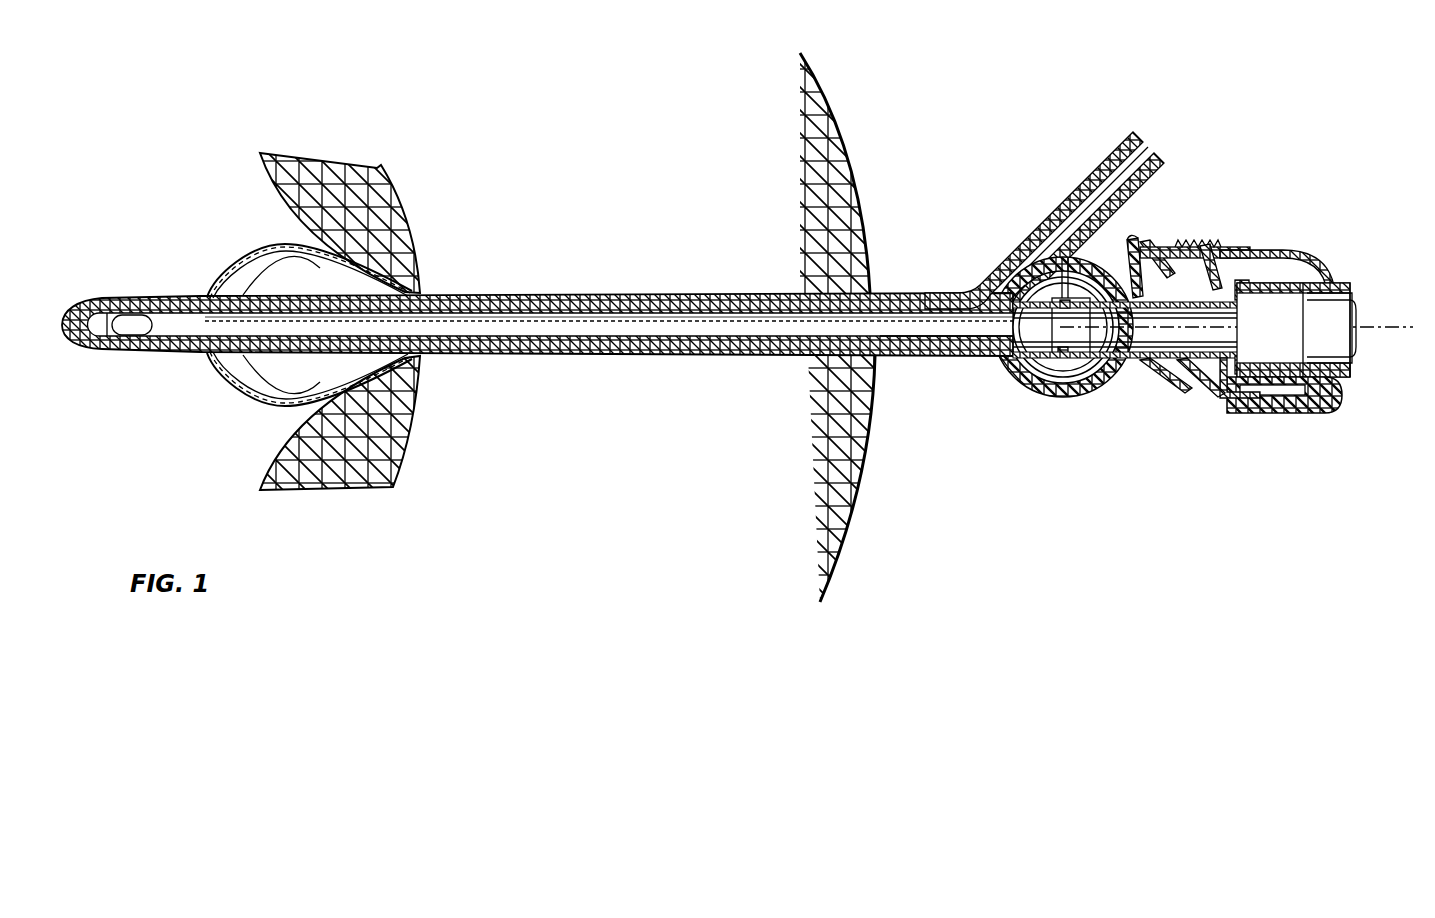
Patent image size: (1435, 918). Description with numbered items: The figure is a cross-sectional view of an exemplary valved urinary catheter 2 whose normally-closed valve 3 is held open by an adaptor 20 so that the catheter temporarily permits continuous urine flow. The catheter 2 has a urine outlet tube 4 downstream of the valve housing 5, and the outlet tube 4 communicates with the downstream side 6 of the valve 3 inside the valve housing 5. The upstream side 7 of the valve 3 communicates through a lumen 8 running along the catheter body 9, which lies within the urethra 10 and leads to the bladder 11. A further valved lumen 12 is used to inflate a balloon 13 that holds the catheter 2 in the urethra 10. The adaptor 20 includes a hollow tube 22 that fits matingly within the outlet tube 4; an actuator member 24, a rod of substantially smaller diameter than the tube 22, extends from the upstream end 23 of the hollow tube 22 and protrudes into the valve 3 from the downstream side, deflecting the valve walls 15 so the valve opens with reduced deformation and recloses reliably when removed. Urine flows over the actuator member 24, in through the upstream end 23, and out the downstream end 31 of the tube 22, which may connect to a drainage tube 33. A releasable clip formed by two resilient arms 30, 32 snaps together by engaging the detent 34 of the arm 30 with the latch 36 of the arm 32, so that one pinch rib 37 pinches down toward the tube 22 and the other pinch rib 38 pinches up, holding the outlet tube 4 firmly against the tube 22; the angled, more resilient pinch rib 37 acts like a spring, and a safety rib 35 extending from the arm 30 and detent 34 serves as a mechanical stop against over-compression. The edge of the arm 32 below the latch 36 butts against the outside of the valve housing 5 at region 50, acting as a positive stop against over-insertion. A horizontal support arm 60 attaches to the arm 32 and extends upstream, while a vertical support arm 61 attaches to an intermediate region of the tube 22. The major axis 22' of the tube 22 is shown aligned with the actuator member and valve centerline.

The valved urinary catheter 2 is at (695, 372).
The valve 3 is at (1068, 388).
The urine outlet tube 4 is at (1127, 362).
The valve housing 5 is at (1058, 397).
The downstream side 6 is at (1092, 385).
The upstream side 7 is at (1003, 260).
The lumen 8 is at (915, 318).
The catheter body 9 is at (708, 292).
The urethra 10 is at (733, 358).
The bladder 11 is at (240, 468).
The valved lumen 12 is at (1149, 150).
The balloon 13 is at (255, 288).
The valve walls 15 is at (1037, 373).
The adaptor 20 is at (1289, 205).
The hollow tube 22 is at (1213, 359).
The major axis of tube 22' is at (1353, 318).
The upstream end 23 is at (1063, 247).
The actuator member 24 is at (1000, 354).
The resilient arm 30 is at (1305, 250).
The downstream end 31 is at (1353, 362).
The resilient arm 32 is at (1290, 415).
The drainage tube 33 is at (1340, 378).
The detent 34 is at (1162, 250).
The safety rib 35 is at (1205, 245).
The latch 36 is at (1145, 235).
The pinch rib 37 is at (1225, 262).
The pinch rib 38 is at (1215, 395).
The region 50 is at (1122, 262).
The horizontal support arm 60 is at (1258, 400).
The vertical support arm 61 is at (1233, 400).